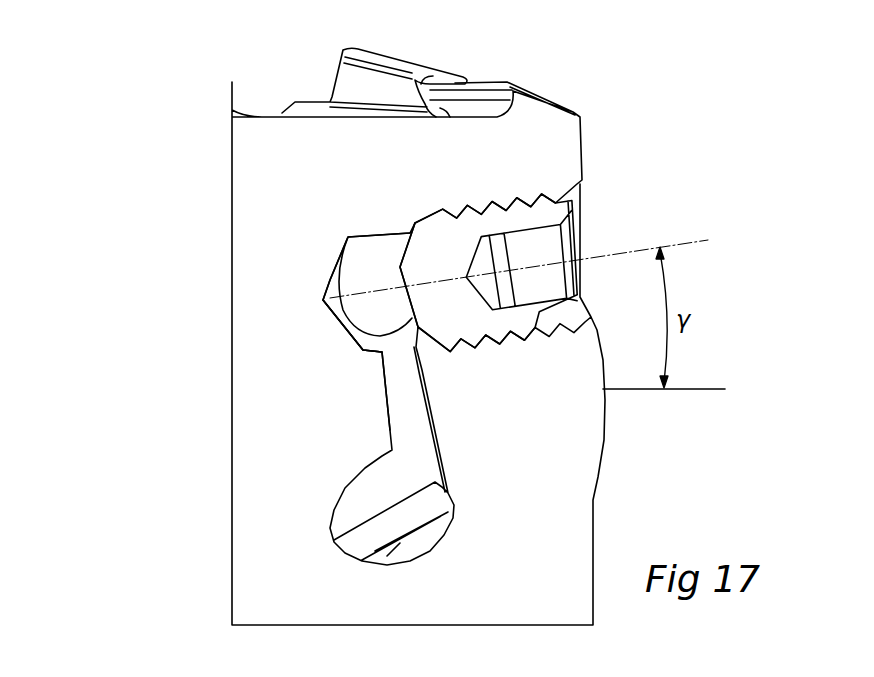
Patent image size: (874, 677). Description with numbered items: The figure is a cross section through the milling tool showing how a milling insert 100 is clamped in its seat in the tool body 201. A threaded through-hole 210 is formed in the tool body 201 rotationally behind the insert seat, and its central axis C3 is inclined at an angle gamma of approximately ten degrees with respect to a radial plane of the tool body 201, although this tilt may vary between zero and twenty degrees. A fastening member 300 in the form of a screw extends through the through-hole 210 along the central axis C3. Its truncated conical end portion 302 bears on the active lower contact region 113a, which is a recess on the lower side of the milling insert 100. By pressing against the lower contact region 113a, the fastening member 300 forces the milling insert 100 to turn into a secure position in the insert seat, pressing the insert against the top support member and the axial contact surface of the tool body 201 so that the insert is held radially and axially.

The milling insert 100 is at (362, 54).
The tool body 201 is at (576, 462).
The threaded through-hole 210 is at (372, 238).
The active lower contact region 113a is at (412, 322).
The fastening member 300 is at (542, 217).
The truncated conical end portion 302 is at (420, 321).
The central axis C3 is at (689, 232).